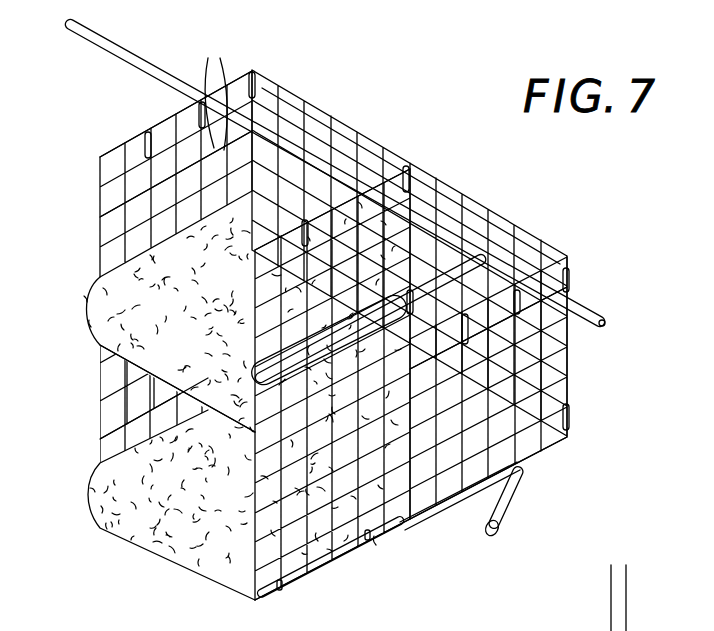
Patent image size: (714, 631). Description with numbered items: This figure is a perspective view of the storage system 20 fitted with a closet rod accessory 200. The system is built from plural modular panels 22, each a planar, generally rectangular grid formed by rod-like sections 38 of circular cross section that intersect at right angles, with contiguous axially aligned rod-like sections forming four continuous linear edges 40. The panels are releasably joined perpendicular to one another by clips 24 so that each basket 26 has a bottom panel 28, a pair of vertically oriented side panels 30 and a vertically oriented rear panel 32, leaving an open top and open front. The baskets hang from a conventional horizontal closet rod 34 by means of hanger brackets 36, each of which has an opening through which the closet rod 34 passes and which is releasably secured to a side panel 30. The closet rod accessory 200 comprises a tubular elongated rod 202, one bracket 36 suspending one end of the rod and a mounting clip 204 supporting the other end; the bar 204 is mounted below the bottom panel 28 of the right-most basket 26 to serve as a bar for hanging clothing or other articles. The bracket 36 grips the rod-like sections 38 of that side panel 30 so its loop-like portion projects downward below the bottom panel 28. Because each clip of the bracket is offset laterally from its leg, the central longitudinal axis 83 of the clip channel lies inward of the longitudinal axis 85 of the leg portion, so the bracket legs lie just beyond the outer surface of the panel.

The gabion basket assembly 20 is at (502, 216).
The modular panel 22 is at (366, 124).
The clip 24 is at (254, 69).
The basket 26 is at (155, 515).
The bottom panel 28 is at (556, 450).
The side panel 30 is at (130, 198).
The rear panel 32 is at (285, 118).
The closet rod 34 is at (608, 328).
The hanger bracket 36 is at (168, 66).
The rod-like section 38 is at (213, 92).
The linear edge 40 is at (97, 162).
The closet rod accessory 200 is at (462, 529).
The tubular elongated rod 202 is at (509, 521).
The mounting clip 204 is at (375, 490).
The central longitudinal axis 83 is at (609, 586).
The longitudinal axis 85 is at (628, 586).